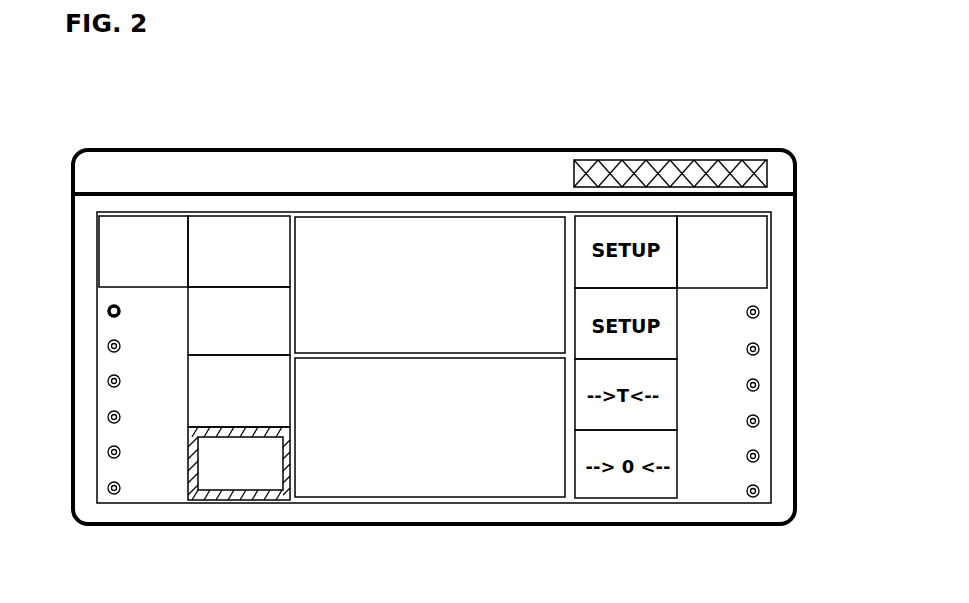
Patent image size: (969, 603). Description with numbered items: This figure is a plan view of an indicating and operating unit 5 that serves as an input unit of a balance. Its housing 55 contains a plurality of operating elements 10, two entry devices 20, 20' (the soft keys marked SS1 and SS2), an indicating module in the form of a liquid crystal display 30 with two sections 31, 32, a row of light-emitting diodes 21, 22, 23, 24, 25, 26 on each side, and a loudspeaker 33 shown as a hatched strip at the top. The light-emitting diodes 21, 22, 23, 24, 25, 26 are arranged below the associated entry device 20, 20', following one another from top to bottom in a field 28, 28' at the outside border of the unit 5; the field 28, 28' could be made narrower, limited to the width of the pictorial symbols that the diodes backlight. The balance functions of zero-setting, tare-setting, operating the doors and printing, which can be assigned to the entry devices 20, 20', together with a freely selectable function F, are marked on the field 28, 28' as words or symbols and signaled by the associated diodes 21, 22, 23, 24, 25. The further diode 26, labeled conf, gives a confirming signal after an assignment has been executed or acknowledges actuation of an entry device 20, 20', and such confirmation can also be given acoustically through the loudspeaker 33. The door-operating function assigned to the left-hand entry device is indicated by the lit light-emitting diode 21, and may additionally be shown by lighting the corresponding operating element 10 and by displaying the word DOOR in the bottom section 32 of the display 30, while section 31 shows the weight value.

The indicating and operating unit 5 is at (313, 148).
The housing 55 is at (360, 165).
The loudspeaker 33 is at (637, 177).
The entry device 20 is at (150, 187).
The entry device 20' is at (729, 189).
The operating elements 10 is at (277, 300).
The liquid crystal display 30 is at (417, 217).
The section of display 31 is at (448, 238).
The bottom section of display 32 is at (442, 390).
The light-emitting diode 21 is at (102, 303).
The light-emitting diode 22 is at (102, 338).
The light-emitting diode 23 is at (102, 378).
The light-emitting diode 24 is at (102, 409).
The light-emitting diode 25 is at (102, 445).
The light-emitting diode 26 is at (102, 485).
The field 28 is at (265, 390).
The field 28' is at (602, 393).